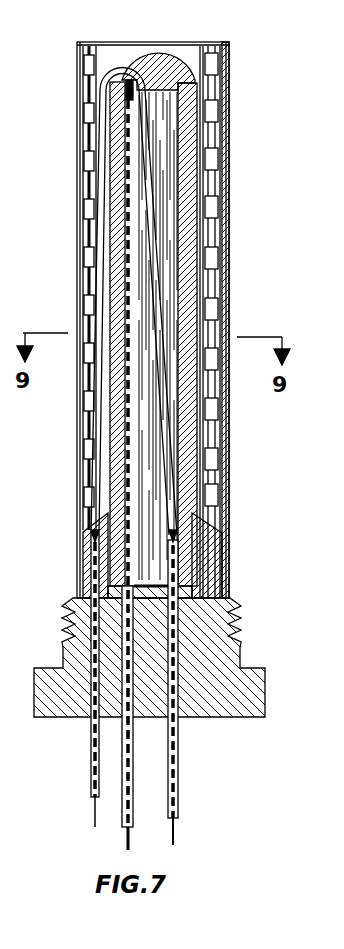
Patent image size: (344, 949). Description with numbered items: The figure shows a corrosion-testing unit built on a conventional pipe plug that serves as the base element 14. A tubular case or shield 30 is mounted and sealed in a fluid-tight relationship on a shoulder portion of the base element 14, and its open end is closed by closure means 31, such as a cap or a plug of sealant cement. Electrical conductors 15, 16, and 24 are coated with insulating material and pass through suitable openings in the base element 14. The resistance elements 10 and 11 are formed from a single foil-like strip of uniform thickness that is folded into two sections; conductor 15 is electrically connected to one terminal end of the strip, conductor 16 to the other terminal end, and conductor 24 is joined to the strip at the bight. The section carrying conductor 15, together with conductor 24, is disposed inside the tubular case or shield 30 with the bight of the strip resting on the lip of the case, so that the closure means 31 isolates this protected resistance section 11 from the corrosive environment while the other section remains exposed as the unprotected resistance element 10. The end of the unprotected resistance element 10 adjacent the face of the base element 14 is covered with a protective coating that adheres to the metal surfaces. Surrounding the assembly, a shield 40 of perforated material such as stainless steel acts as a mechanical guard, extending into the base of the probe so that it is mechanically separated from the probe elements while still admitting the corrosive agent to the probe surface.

The unprotected resistance element 10 is at (80, 497).
The resistance element 11 is at (192, 286).
The base element 14 is at (238, 636).
The electrical conductor 15 is at (177, 781).
The electrical conductor 16 is at (91, 786).
The electrical conductor 24 is at (133, 784).
The tubular case or shield 30 is at (190, 174).
The closure means 31 is at (162, 58).
The shield 40 is at (80, 243).